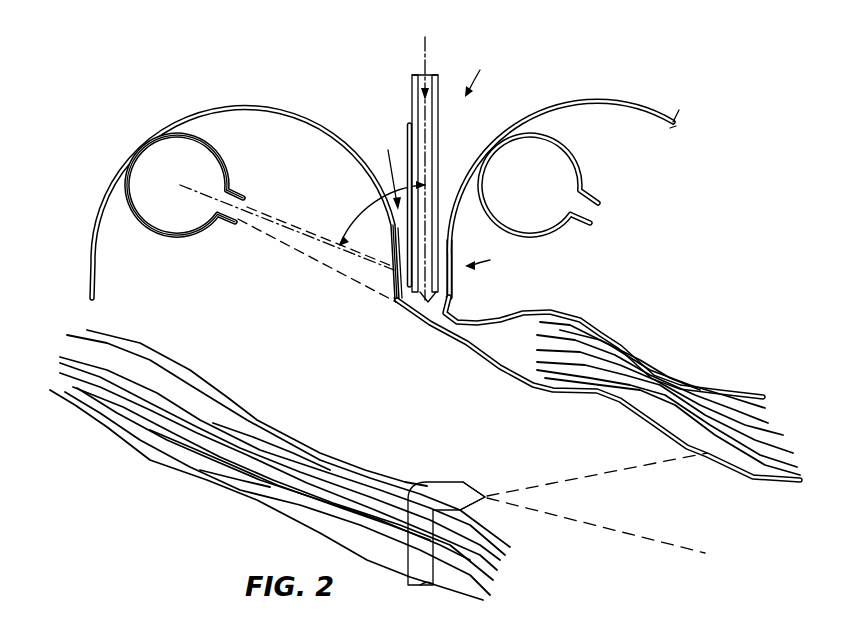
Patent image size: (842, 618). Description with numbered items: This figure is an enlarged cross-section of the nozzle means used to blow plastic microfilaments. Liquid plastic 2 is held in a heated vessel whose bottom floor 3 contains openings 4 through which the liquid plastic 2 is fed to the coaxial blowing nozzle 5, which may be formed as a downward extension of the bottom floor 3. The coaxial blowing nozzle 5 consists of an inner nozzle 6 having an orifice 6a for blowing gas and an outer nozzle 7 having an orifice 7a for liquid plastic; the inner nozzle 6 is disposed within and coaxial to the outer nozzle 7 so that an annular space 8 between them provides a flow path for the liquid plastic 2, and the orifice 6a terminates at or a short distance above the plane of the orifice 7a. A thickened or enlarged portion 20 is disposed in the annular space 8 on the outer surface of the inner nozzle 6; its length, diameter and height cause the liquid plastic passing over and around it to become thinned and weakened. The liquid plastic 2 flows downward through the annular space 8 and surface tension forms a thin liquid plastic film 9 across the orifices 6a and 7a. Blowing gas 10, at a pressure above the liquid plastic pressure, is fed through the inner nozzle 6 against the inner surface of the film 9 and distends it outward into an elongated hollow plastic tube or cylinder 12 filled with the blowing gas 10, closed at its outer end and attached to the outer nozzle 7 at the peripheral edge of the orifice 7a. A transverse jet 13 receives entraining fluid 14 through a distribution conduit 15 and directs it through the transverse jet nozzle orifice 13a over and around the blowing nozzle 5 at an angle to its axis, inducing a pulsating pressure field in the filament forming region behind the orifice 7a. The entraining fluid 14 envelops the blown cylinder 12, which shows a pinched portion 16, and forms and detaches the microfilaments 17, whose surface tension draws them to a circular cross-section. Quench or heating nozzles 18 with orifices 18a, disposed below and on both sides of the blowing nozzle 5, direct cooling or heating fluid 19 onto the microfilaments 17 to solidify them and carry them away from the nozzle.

The liquid plastic 2 is at (389, 169).
The bottom floor 3 is at (198, 100).
The openings 4 is at (477, 73).
The coaxial blowing nozzle 5 is at (483, 256).
The inner nozzle 6 is at (452, 224).
The orifice of inner nozzle 6a is at (395, 302).
The outer nozzle 7 is at (452, 280).
The orifice of outer nozzle 7a is at (428, 302).
The annular space 8 is at (440, 250).
The liquid plastic film 9 is at (449, 297).
The blowing gas 10 is at (425, 157).
The elongated hollow plastic tube or cylinder 12 is at (517, 312).
The transverse jet 13 is at (237, 195).
The transverse jet nozzle orifice 13a is at (247, 207).
The entraining fluid 14 is at (203, 157).
The distribution conduit 15 is at (152, 232).
The pinched portion 16 is at (432, 318).
The microfilaments 17 is at (238, 420).
The quench or heating nozzles 18 is at (445, 483).
The orifices of quench or heating nozzles 18a is at (483, 492).
The cooling or heating fluid 19 is at (563, 480).
The thickened or enlarged portion 20 is at (407, 128).